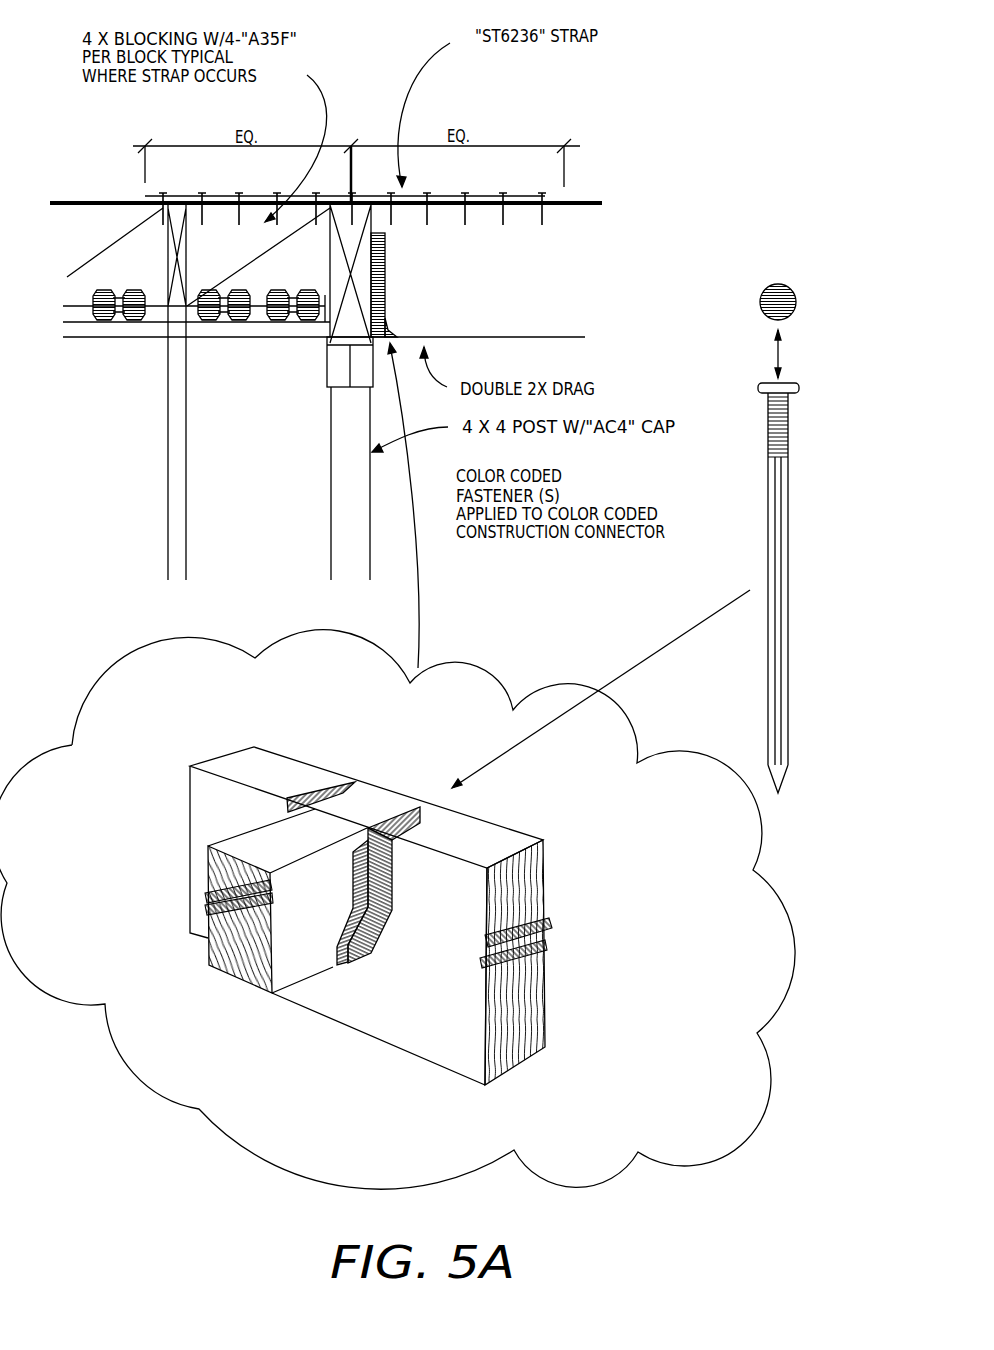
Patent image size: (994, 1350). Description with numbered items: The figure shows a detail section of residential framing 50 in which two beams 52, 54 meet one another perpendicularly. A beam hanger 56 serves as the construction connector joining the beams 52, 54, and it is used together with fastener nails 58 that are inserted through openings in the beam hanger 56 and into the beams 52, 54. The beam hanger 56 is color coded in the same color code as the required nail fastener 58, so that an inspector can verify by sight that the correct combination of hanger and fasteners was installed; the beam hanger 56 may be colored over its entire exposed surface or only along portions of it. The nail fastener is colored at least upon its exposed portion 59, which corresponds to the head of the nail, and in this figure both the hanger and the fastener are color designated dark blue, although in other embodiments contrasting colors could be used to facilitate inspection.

The residential framing 50 is at (400, 753).
The beam 52 is at (541, 836).
The beam 54 is at (272, 994).
The beam hanger 56 is at (353, 963).
The fastener nail 58 is at (790, 422).
The exposed portion of nail fastener 59 is at (790, 380).